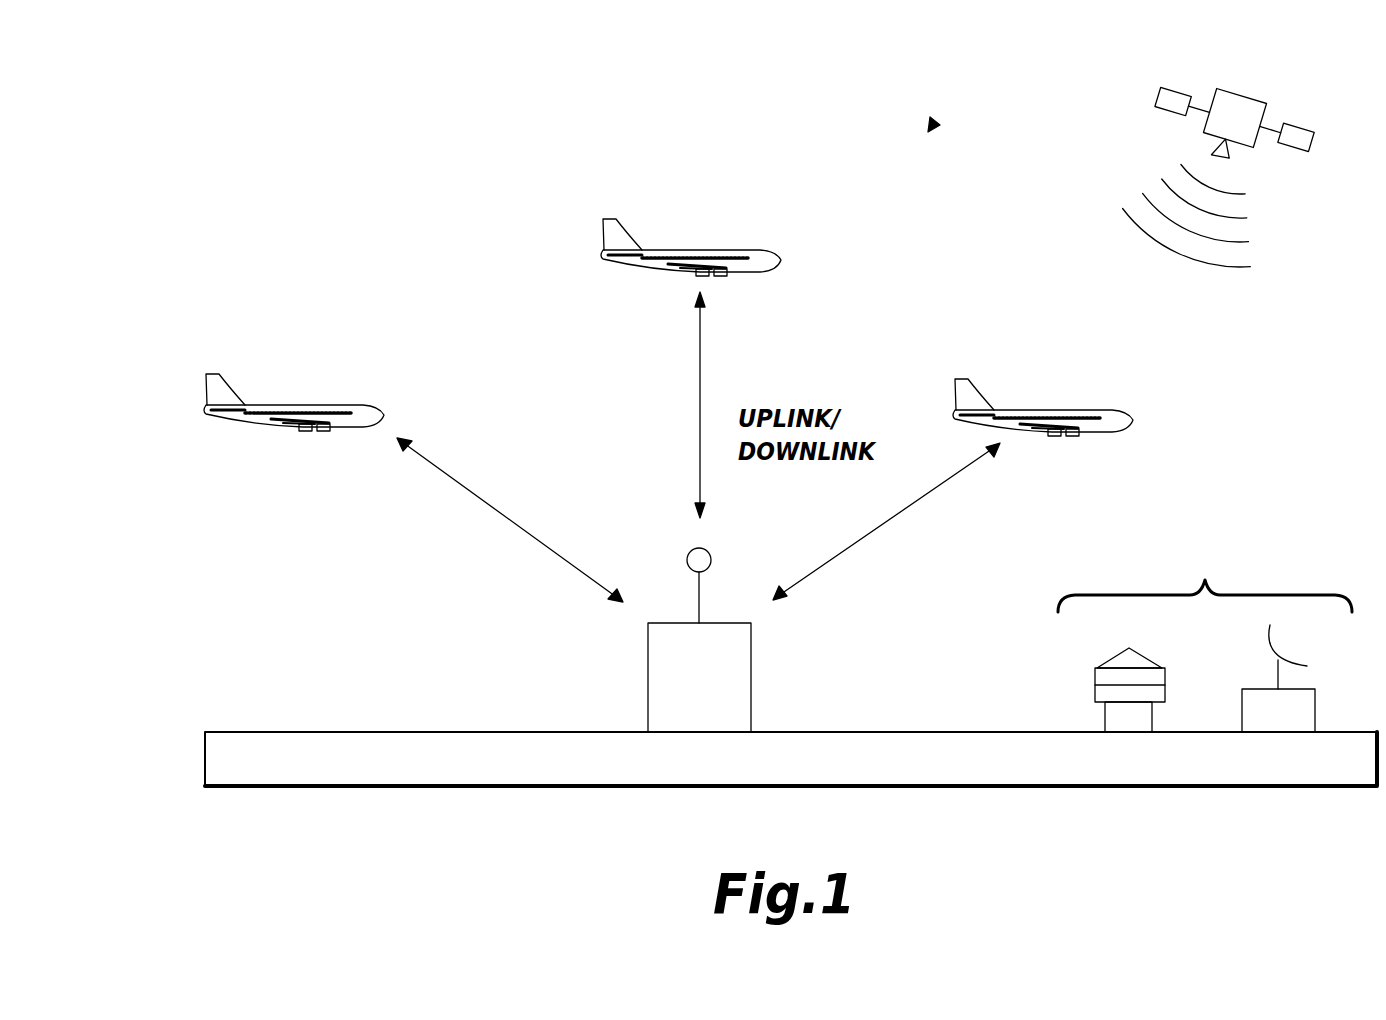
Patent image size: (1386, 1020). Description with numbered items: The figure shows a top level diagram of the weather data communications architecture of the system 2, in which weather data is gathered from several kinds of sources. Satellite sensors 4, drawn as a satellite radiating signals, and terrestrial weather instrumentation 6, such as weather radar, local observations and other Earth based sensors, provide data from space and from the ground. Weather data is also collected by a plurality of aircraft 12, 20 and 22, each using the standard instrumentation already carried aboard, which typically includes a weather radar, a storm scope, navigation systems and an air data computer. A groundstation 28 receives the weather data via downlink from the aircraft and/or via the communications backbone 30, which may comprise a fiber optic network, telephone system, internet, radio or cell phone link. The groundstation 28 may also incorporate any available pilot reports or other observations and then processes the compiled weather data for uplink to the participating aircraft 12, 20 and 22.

The system 2 is at (931, 125).
The satellite sensors 4 is at (1253, 102).
The terrestrial weather instrumentation 6 is at (1205, 580).
The aircraft 12 is at (742, 250).
The aircraft 20 is at (1093, 410).
The aircraft 22 is at (345, 405).
The groundstation 28 is at (752, 673).
The communications backbone 30 is at (868, 732).